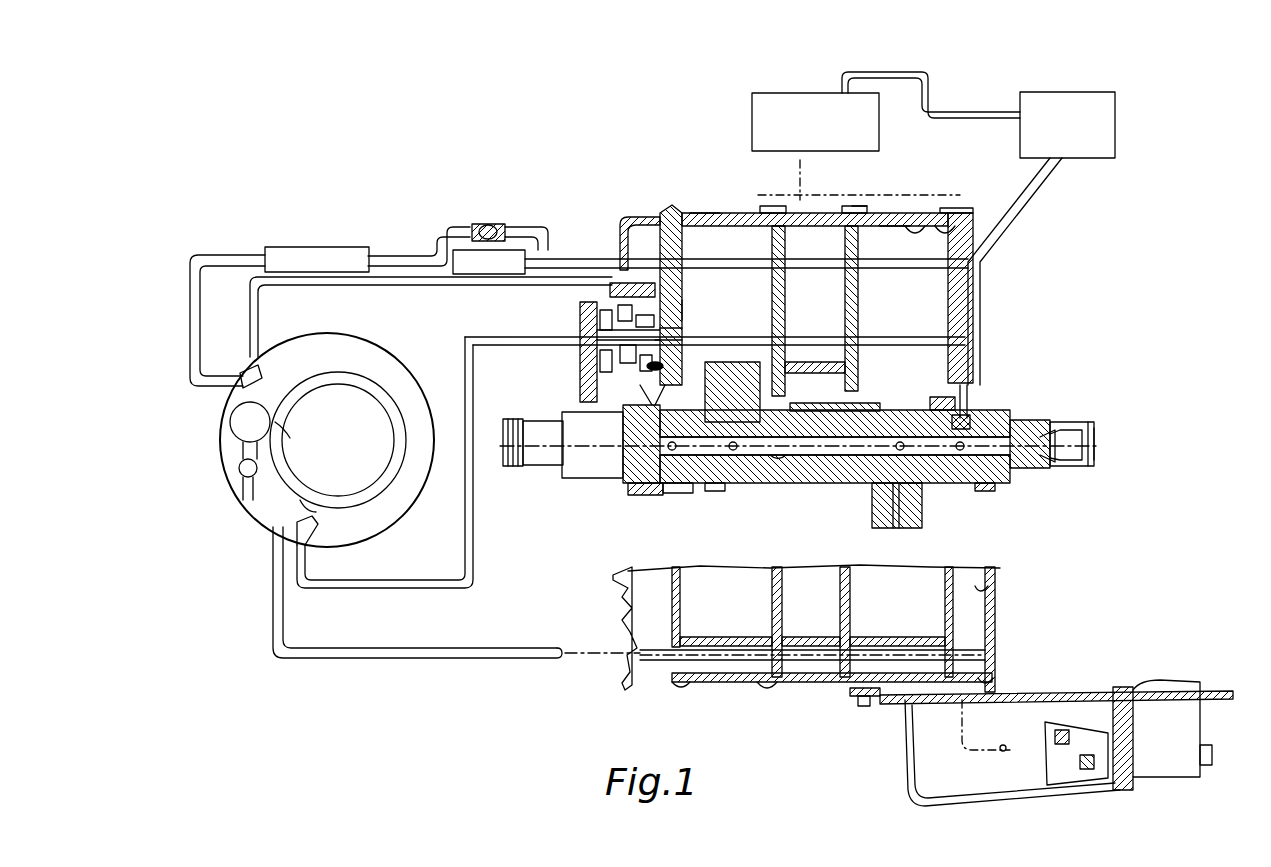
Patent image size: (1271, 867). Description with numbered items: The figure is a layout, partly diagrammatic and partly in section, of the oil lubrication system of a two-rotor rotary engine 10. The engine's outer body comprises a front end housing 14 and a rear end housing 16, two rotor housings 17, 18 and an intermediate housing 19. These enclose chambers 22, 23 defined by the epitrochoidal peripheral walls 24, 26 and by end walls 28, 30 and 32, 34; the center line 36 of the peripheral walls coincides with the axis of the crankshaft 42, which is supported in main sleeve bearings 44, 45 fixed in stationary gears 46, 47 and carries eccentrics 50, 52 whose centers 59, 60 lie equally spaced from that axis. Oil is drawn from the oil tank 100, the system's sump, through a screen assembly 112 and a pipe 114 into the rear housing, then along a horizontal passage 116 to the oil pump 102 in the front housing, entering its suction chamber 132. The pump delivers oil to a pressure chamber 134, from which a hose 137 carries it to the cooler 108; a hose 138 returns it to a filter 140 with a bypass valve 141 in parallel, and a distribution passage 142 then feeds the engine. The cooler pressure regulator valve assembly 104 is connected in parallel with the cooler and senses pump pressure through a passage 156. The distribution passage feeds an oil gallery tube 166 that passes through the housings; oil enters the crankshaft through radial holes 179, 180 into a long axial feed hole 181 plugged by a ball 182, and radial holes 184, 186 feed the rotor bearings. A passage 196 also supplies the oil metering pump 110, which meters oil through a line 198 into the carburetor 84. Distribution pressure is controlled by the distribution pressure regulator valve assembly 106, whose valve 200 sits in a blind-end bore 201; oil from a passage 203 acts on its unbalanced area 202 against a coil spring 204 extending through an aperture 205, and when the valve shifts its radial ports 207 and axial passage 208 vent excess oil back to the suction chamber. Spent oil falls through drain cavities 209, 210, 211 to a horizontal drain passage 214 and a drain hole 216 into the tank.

The two-rotor rotary engine 10 is at (810, 213).
The front end housing 14 is at (625, 215).
The rear end housing 16 is at (975, 215).
The rotor housing 17 is at (718, 210).
The rotor housing 18 is at (898, 222).
The intermediate housing 19 is at (848, 213).
The chamber 22 is at (745, 620).
The chamber 23 is at (930, 623).
The peripheral wall 24 is at (740, 213).
The peripheral wall 26 is at (915, 228).
The end wall 28 is at (690, 220).
The end wall 30 is at (773, 210).
The end wall 32 is at (862, 220).
The end wall 34 is at (945, 228).
The center line 36 is at (1100, 443).
The crankshaft 42 is at (1042, 418).
The main sleeve bearing 44 is at (665, 496).
The main sleeve bearing 45 is at (985, 487).
The stationary gear 46 is at (690, 494).
The stationary gear 47 is at (935, 400).
The eccentric 50 is at (760, 390).
The eccentric 52 is at (875, 512).
The eccentric center 59 is at (810, 438).
The eccentric center 60 is at (862, 475).
The carburetor 84 is at (798, 103).
The oil tank 100 is at (1200, 730).
The oil pump 102 is at (420, 385).
The cooler pressure regulator valve assembly 104 is at (688, 302).
The distribution pressure regulator valve assembly 106 is at (686, 330).
The cooler 108 is at (318, 248).
The oil metering pump 110 is at (1108, 105).
The screen assembly 112 is at (1070, 770).
The pipe 114 is at (1030, 745).
The horizontal passage 116 is at (745, 682).
The suction chamber 132 is at (275, 512).
The pressure chamber 134 is at (280, 388).
The hose 137 is at (190, 300).
The hose 138 is at (398, 257).
The filter 140 is at (520, 262).
The bypass valve 141 is at (490, 224).
The distribution passage 142 is at (975, 285).
The passage 156 is at (445, 286).
The oil gallery tube 166 is at (945, 345).
The radial hole 179 is at (660, 470).
The radial hole 180 is at (972, 432).
The axial feed hole 181 is at (778, 462).
The ball 182 is at (1048, 452).
The radial hole 184 is at (725, 480).
The radial hole 186 is at (905, 500).
The passage 196 is at (1060, 178).
The line 198 is at (990, 110).
The valve 200 is at (632, 410).
The blind-end bore 201 is at (682, 338).
The unbalanced area 202 is at (722, 383).
The passage 203 is at (640, 445).
The coil spring 204 is at (600, 365).
The aperture 205 is at (600, 390).
The radial ports 207 is at (663, 366).
The axial passage 208 is at (660, 360).
The drain cavity 209 is at (648, 650).
The drain cavity 210 is at (785, 597).
The drain cavity 211 is at (977, 590).
The horizontal drain passage 214 is at (855, 672).
The drain hole 216 is at (985, 678).